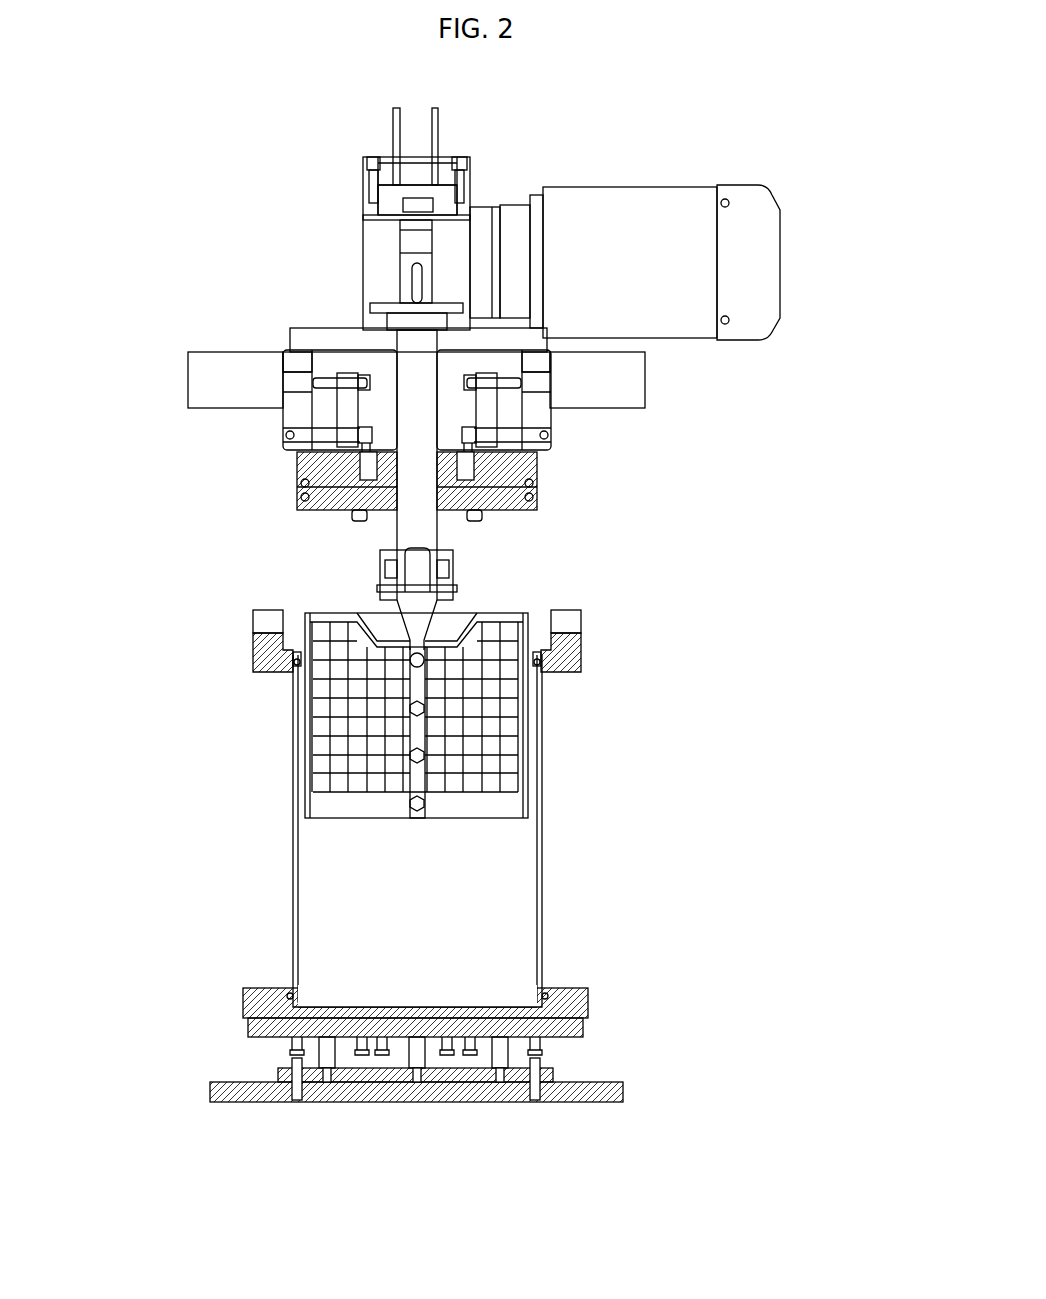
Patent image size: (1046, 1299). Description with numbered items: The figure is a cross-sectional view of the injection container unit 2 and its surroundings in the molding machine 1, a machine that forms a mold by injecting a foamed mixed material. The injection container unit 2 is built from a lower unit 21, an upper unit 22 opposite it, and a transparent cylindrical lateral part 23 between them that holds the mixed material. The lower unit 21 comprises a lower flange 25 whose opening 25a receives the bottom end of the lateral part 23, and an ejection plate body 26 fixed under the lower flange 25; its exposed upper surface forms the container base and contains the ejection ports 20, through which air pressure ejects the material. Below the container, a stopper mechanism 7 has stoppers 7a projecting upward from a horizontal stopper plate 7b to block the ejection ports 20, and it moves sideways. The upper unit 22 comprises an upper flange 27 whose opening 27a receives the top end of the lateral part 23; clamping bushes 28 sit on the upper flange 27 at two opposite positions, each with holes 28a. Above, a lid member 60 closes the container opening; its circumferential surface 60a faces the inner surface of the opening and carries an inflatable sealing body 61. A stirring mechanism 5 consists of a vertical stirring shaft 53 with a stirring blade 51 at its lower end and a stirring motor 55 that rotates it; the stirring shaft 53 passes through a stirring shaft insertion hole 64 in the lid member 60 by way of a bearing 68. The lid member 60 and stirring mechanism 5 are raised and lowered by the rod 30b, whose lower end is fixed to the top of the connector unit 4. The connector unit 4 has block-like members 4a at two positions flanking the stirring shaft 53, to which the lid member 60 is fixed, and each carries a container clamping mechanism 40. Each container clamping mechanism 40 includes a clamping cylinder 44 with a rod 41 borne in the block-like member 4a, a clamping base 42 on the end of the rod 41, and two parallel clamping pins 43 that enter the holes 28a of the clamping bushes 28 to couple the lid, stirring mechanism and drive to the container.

The molding machine 1 is at (170, 150).
The injection container unit 2 is at (361, 828).
The connector unit 4 is at (388, 365).
The block-like member 4a is at (283, 350).
The stirring mechanism 5 is at (578, 487).
The stopper mechanism 7 is at (416, 1113).
The stopper 7a is at (520, 1152).
The stopper plate 7b is at (375, 1082).
The ejection port 20 is at (297, 1040).
The lower unit 21 is at (375, 985).
The upper unit 22 is at (395, 660).
The lateral part 23 is at (293, 842).
The lower flange 25 is at (243, 1000).
The opening 25a is at (290, 990).
The ejection plate body 26 is at (248, 1025).
The upper flange 27 is at (293, 660).
The opening 27a is at (373, 688).
The clamping bush 28 is at (260, 650).
The hole 28a is at (254, 625).
The rod 30b is at (436, 130).
The container clamping mechanism 40 is at (389, 419).
The rod 41 is at (293, 385).
The clamping base 42 is at (343, 410).
The clamping pin 43 is at (310, 437).
The clamping cylinder 44 is at (198, 367).
The stirring blade 51 is at (530, 613).
The stirring shaft 53 is at (423, 338).
The stirring motor 55 is at (678, 318).
The lid member 60 is at (347, 503).
The circumferential surface 60a is at (300, 478).
The sealing body 61 is at (301, 497).
The stirring shaft insertion hole 64 is at (385, 512).
The bearing 68 is at (450, 512).